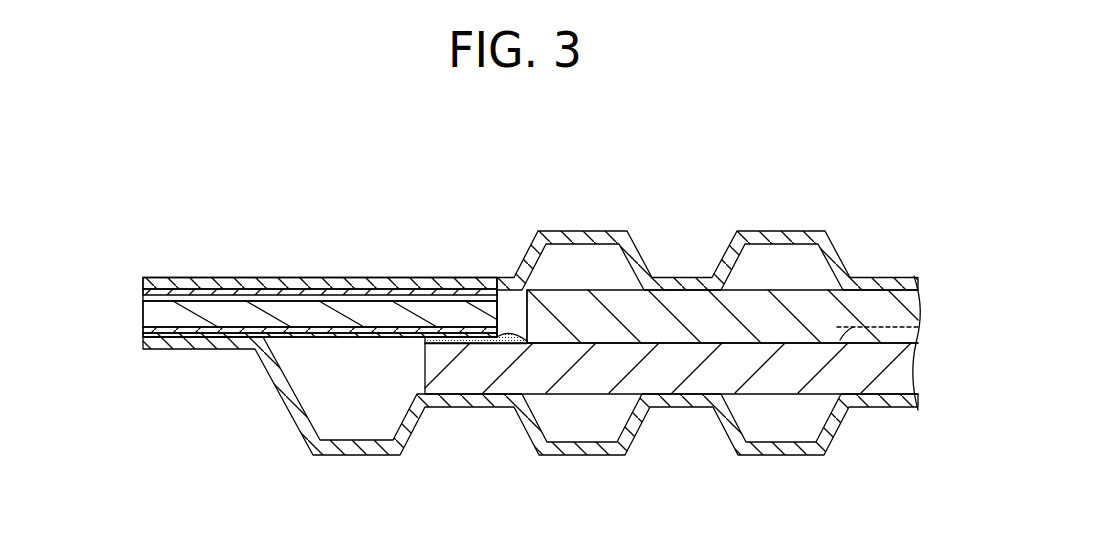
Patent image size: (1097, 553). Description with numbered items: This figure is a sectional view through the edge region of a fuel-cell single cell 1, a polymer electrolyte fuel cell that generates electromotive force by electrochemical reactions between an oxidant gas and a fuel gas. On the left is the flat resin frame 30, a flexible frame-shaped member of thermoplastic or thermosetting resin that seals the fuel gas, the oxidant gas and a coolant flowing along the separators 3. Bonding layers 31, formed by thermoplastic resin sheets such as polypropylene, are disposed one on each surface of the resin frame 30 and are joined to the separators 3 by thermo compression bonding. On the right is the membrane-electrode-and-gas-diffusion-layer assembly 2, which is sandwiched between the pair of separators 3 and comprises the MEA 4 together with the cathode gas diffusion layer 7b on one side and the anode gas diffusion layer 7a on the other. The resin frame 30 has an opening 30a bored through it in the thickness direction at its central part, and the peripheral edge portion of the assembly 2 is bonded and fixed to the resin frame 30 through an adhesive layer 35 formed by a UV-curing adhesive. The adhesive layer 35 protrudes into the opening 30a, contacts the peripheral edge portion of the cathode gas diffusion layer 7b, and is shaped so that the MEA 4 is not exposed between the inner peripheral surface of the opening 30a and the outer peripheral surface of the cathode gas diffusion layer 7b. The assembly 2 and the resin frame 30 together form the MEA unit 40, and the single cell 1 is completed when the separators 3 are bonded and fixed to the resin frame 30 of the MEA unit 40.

The fuel-cell single cell 1 is at (346, 171).
The membrane-electrode-and-gas-diffusion-layer assembly 2 is at (552, 294).
The separator 3 is at (591, 230).
The MEA 4 is at (918, 327).
The anode gas diffusion layer 7a is at (890, 376).
The cathode gas diffusion layer 7b is at (892, 305).
The resin frame 30 is at (358, 299).
The opening 30a is at (509, 304).
The bonding layer 31 is at (205, 284).
The adhesive layer 35 is at (500, 345).
The MEA unit 40 is at (154, 307).